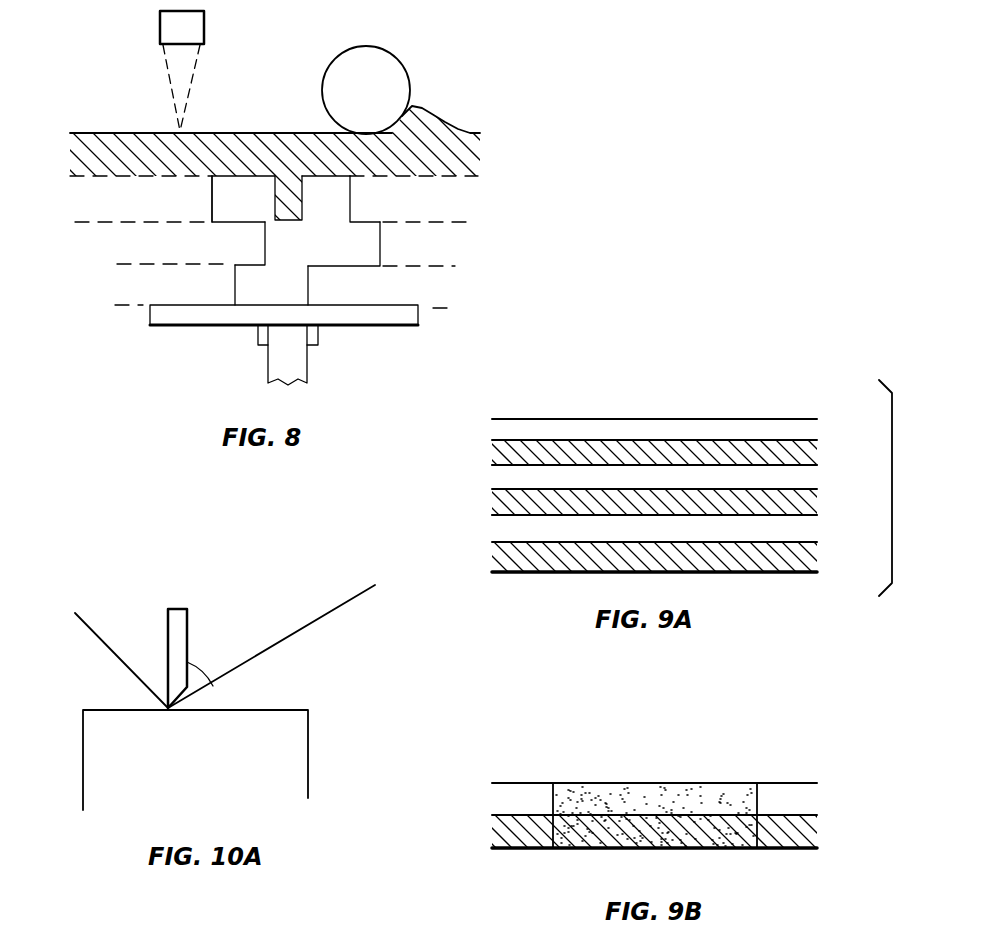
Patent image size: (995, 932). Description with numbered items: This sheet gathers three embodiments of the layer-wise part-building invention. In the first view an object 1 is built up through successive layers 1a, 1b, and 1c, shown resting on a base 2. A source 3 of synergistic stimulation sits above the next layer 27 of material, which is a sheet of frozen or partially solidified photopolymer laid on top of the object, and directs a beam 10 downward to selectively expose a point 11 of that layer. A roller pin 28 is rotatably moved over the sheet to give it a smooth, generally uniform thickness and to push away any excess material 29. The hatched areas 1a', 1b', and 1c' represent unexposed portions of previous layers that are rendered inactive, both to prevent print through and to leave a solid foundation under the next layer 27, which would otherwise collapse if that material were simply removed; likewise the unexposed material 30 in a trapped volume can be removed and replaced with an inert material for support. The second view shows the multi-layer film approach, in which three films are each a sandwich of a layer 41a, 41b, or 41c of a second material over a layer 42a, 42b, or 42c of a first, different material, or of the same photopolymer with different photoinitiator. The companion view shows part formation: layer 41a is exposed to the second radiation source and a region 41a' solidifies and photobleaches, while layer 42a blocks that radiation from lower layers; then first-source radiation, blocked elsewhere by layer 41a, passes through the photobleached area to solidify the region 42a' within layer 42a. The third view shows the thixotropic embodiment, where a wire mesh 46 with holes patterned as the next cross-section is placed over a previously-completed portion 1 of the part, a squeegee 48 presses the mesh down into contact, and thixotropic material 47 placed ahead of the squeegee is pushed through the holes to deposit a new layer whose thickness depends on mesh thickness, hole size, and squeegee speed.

In FIG. 10A, the object 1 is at (310, 733).
In FIG. 8, the layer 1a is at (313, 199).
In FIG. 8, the layer 1b is at (342, 244).
In FIG. 8, the layer 1c is at (324, 285).
In FIG. 8, the unexposed material area 1a' is at (299, 183).
In FIG. 8, the unexposed material area 1b' is at (288, 241).
In FIG. 8, the unexposed material area 1c' is at (287, 286).
In FIG. 8, the base plate 2 is at (418, 313).
In FIG. 8, the source of synergistic stimulation 3 is at (205, 26).
In FIG. 8, the beam 10 is at (193, 88).
In FIG. 8, the exposed point 11 is at (182, 130).
In FIG. 8, the next layer of material 27 is at (109, 133).
In FIG. 8, the roller pin 28 is at (400, 53).
In FIG. 8, the excess material 29 is at (422, 106).
In FIG. 8, the unexposed material in trapped volume 30 is at (275, 210).
In FIG. 9A, the layer of second material 41a is at (688, 425).
In FIG. 9B, the layer of second material 41a is at (687, 794).
In FIG. 9A, the layer of second material 41b is at (808, 477).
In FIG. 9A, the layer of second material 41c is at (800, 530).
In FIG. 9A, the layer of first material 42a is at (623, 451).
In FIG. 9B, the layer of first material 42a is at (639, 831).
In FIG. 9A, the layer of first material 42b is at (492, 497).
In FIG. 9A, the layer of first material 42c is at (492, 550).
In FIG. 9B, the selectively solidified area 41a' is at (655, 794).
In FIG. 9B, the selectively solidified area 42a' is at (655, 852).
In FIG. 10A, the wire mesh 46 is at (337, 611).
In FIG. 10A, the thixotropic material 47 is at (205, 666).
In FIG. 10A, the squeegee 48 is at (176, 608).